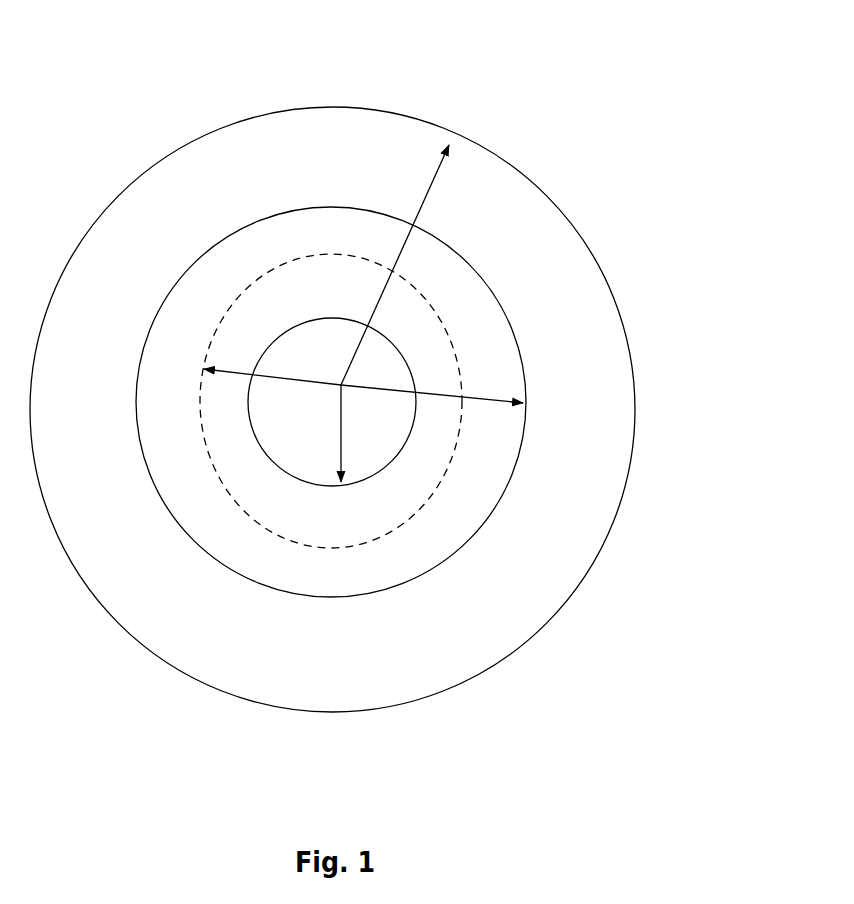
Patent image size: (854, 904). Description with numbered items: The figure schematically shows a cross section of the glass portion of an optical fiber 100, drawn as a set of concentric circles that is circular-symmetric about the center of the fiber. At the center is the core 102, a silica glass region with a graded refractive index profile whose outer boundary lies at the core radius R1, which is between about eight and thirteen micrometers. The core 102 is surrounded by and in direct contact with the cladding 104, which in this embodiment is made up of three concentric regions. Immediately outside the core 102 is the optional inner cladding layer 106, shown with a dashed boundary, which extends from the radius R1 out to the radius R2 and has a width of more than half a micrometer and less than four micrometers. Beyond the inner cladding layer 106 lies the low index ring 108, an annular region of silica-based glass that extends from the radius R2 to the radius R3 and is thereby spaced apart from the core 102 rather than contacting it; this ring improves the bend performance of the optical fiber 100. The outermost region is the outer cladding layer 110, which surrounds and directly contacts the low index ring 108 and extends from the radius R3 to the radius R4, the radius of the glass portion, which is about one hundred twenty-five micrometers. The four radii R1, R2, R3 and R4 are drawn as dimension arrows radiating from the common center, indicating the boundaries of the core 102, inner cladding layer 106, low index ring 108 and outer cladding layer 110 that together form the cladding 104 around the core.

The optical fiber 100 is at (405, 360).
The core 102 is at (388, 363).
The cladding 104 is at (636, 364).
The inner cladding layer 106 is at (412, 312).
The low index ring 108 is at (470, 490).
The outer cladding layer 110 is at (607, 424).
The core radius R1 is at (320, 433).
The inner cladding outer radius R2 is at (272, 367).
The low index ring outer radius R3 is at (432, 385).
The glass portion radius R4 is at (395, 265).